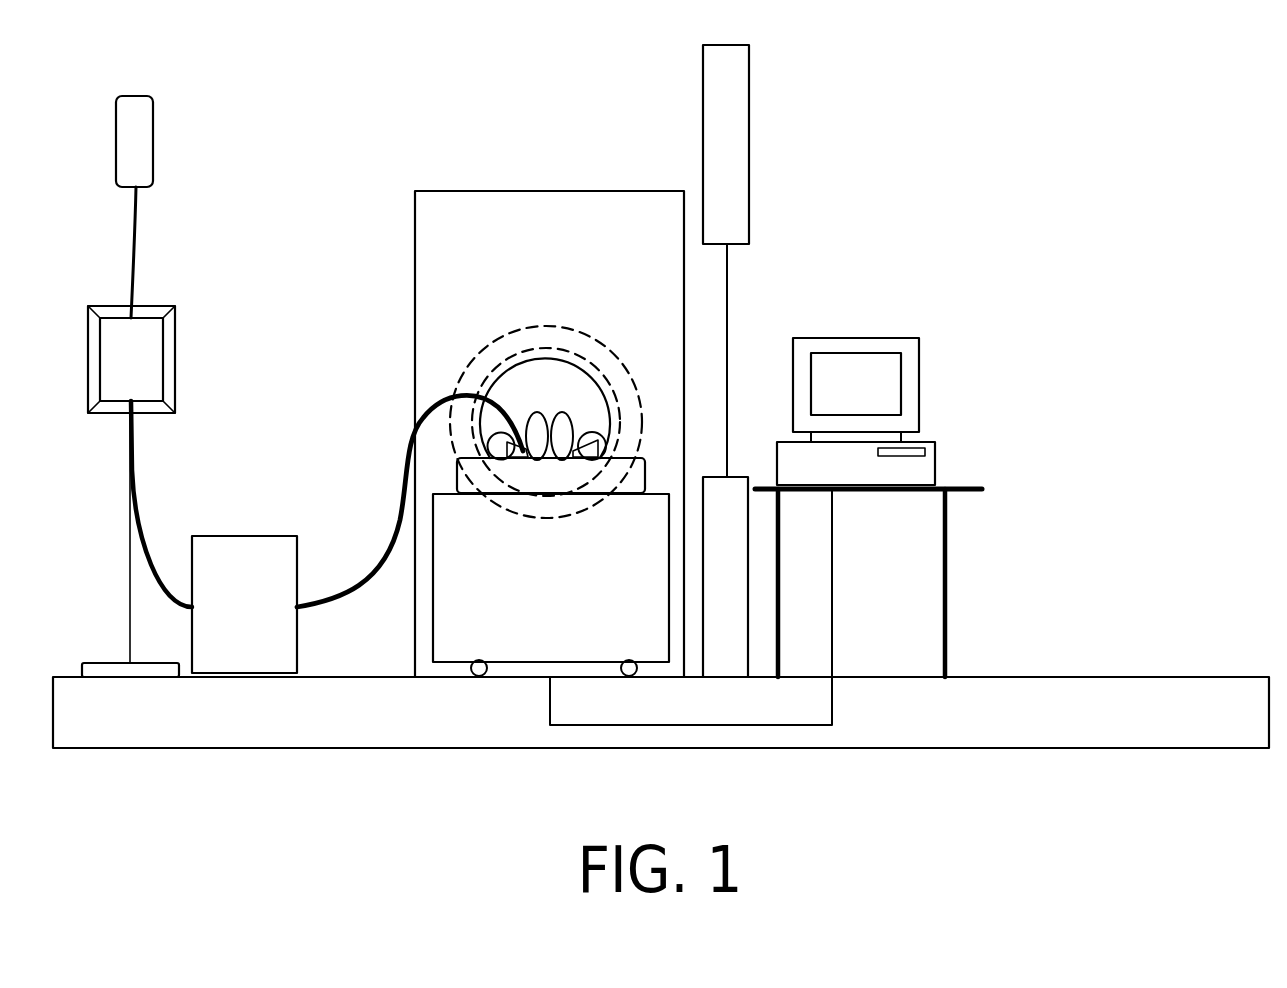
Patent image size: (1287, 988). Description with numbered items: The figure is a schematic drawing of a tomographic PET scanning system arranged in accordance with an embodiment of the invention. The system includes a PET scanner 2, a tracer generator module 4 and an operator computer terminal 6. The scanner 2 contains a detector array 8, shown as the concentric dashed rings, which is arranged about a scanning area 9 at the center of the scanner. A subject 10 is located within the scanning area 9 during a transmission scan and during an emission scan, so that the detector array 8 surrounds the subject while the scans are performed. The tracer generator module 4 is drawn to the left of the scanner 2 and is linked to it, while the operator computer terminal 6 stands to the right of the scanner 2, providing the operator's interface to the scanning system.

The PET scanner 2 is at (518, 190).
The tracer generator module 4 is at (235, 608).
The operator computer terminal 6 is at (882, 338).
The detector array 8 is at (521, 326).
The scanning area 9 is at (548, 375).
The subject 10 is at (572, 412).